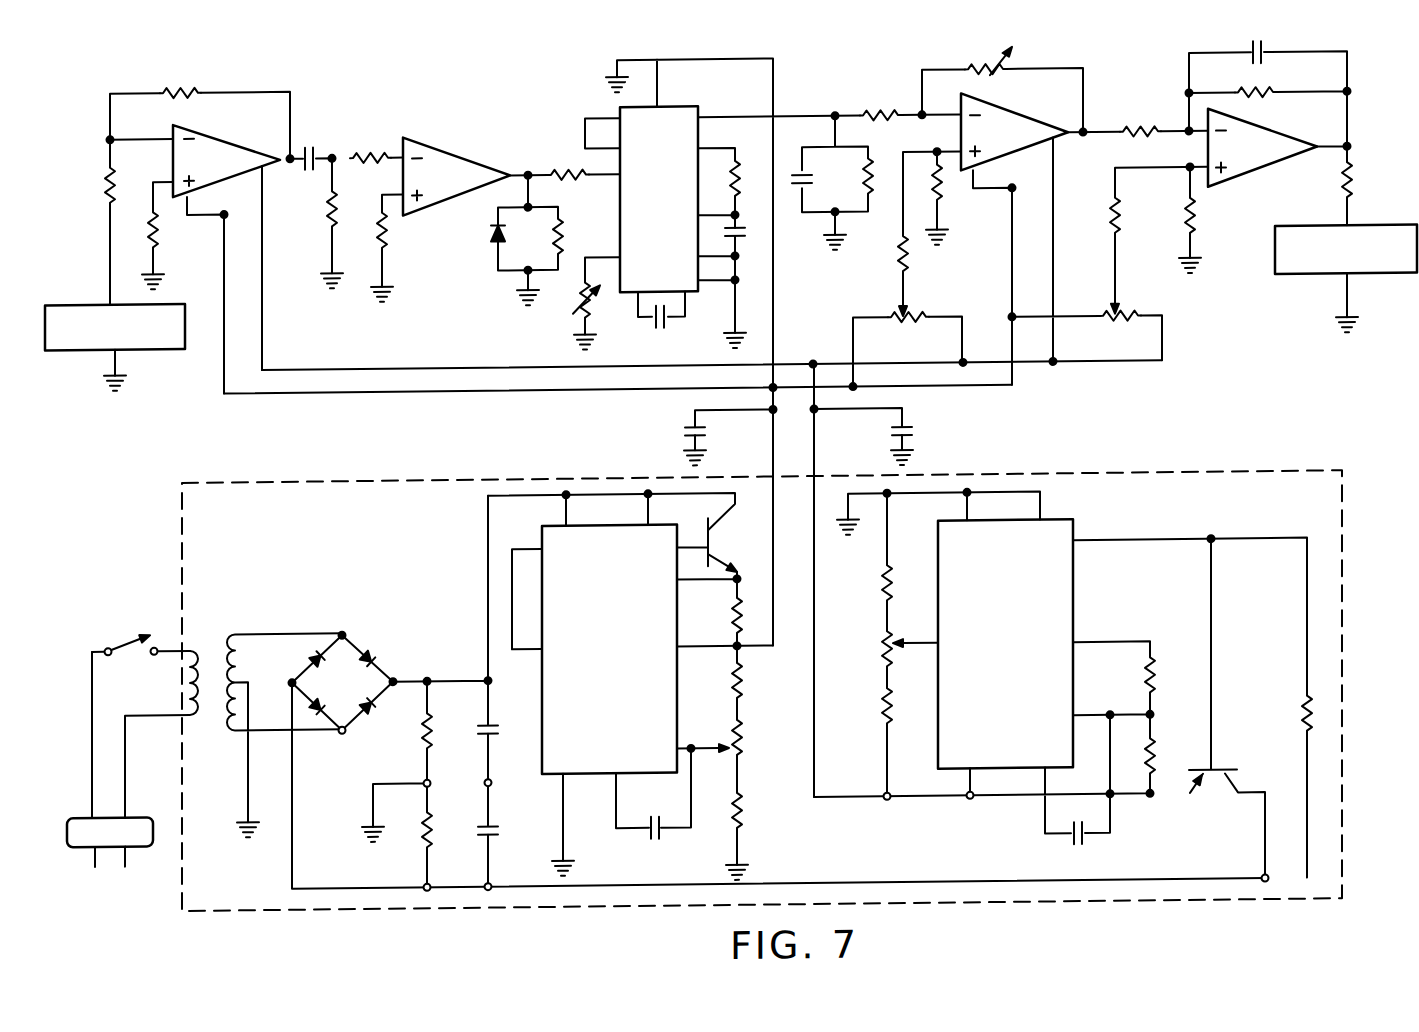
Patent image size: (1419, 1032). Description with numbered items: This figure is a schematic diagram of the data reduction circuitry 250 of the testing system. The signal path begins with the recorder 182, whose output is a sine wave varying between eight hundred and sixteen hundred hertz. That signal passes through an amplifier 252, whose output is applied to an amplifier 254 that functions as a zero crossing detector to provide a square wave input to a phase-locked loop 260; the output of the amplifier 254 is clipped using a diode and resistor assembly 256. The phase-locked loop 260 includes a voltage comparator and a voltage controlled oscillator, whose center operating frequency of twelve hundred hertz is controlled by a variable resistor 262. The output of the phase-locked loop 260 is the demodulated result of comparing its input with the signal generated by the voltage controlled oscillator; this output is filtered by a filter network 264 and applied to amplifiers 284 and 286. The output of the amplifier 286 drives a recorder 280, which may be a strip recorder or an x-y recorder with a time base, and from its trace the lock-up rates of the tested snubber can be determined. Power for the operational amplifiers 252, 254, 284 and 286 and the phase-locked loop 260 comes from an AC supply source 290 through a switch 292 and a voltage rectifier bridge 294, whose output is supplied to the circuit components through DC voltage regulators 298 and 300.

The recorder 182 is at (77, 304).
The data reduction circuitry 250 is at (253, 417).
The amplifier 252 is at (218, 151).
The amplifier 254 is at (447, 168).
The diode and resistor assembly 256 is at (492, 260).
The phase-locked loop 260 is at (640, 223).
The variable resistor 262 is at (605, 288).
The filter network 264 is at (818, 233).
The recorder 280 is at (1363, 246).
The amplifier 284 is at (1003, 128).
The amplifier 286 is at (1278, 154).
The AC supply source 290 is at (113, 838).
The switch 292 is at (107, 648).
The voltage rectifier bridge 294 is at (340, 672).
The DC voltage regulator 298 is at (627, 675).
The DC voltage regulator 300 is at (1023, 672).